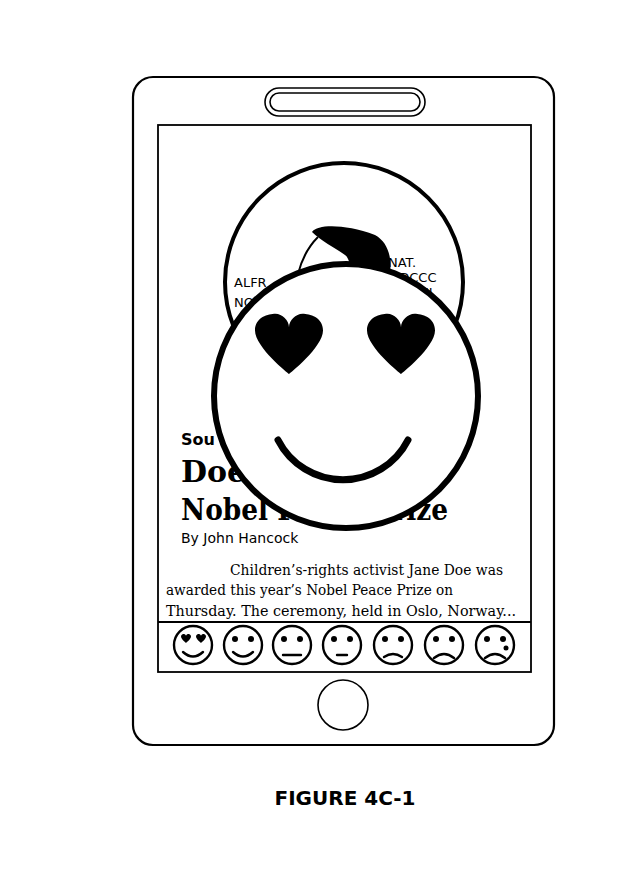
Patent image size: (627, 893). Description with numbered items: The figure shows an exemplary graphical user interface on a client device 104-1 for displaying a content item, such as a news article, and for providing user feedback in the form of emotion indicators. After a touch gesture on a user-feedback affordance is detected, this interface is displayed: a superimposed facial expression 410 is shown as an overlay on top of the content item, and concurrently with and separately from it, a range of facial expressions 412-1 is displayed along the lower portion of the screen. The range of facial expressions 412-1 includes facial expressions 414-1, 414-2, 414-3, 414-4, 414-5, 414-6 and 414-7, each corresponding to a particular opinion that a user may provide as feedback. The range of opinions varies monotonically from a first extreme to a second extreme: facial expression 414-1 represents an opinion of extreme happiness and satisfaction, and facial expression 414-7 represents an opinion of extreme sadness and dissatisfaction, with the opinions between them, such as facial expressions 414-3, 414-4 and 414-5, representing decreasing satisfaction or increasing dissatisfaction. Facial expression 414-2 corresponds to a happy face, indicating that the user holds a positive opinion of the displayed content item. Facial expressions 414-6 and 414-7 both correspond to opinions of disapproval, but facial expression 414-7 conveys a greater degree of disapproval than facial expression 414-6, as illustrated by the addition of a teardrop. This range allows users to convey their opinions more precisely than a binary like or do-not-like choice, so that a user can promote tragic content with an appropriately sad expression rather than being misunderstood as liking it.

The client device 104-1 is at (347, 77).
The superimposed facial expression 410 is at (463, 345).
The range of facial expressions 412-1 is at (532, 638).
The facial expression 414-1 is at (194, 664).
The facial expression 414-2 is at (245, 664).
The facial expression 414-3 is at (295, 664).
The facial expression 414-4 is at (355, 662).
The facial expression 414-5 is at (408, 661).
The facial expression 414-6 is at (460, 661).
The facial expression 414-7 is at (511, 661).